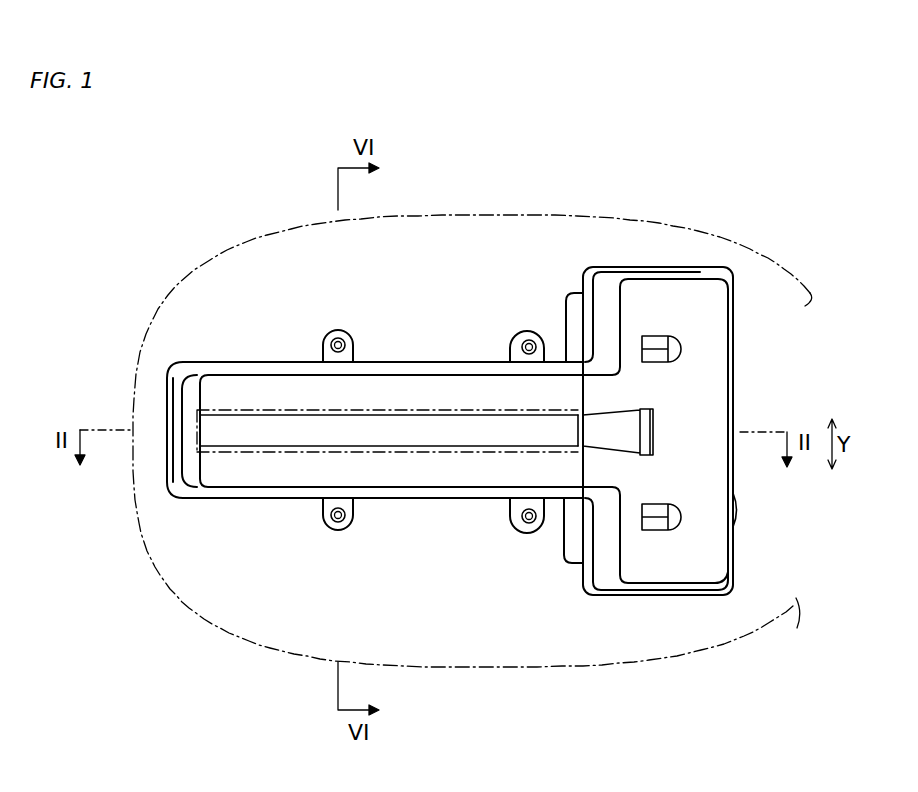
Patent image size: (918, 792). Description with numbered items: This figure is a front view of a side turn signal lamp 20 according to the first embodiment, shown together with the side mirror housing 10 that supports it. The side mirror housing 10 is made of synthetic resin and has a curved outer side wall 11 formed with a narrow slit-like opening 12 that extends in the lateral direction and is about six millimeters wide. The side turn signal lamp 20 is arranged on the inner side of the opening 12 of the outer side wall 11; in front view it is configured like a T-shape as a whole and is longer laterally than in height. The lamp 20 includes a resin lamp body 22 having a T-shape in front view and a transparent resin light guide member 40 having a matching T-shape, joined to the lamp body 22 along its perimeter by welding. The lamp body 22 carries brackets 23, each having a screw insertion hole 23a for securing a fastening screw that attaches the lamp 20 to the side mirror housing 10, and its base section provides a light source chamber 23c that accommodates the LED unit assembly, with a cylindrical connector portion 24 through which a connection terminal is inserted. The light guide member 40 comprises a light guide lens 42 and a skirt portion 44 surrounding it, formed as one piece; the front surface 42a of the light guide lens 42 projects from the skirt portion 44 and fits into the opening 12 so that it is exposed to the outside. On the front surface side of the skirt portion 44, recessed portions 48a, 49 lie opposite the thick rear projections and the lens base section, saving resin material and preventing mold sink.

The side mirror housing 10 is at (472, 404).
The outer side wall 11 is at (252, 232).
The opening 12 is at (290, 445).
The side turn signal lamp 20 is at (248, 360).
The lamp body 22 is at (452, 500).
The brackets 23 is at (330, 333).
The screw insertion hole 23a is at (345, 345).
The light source chamber 23c is at (650, 267).
The cylindrical connector portion 24 is at (738, 515).
The light guide member 40 is at (501, 345).
The light guide lens 42 is at (501, 302).
The front surface 42a is at (574, 327).
The skirt portion 44 is at (552, 395).
The recessed portion 48a is at (682, 349).
The recessed portion 49 is at (618, 420).